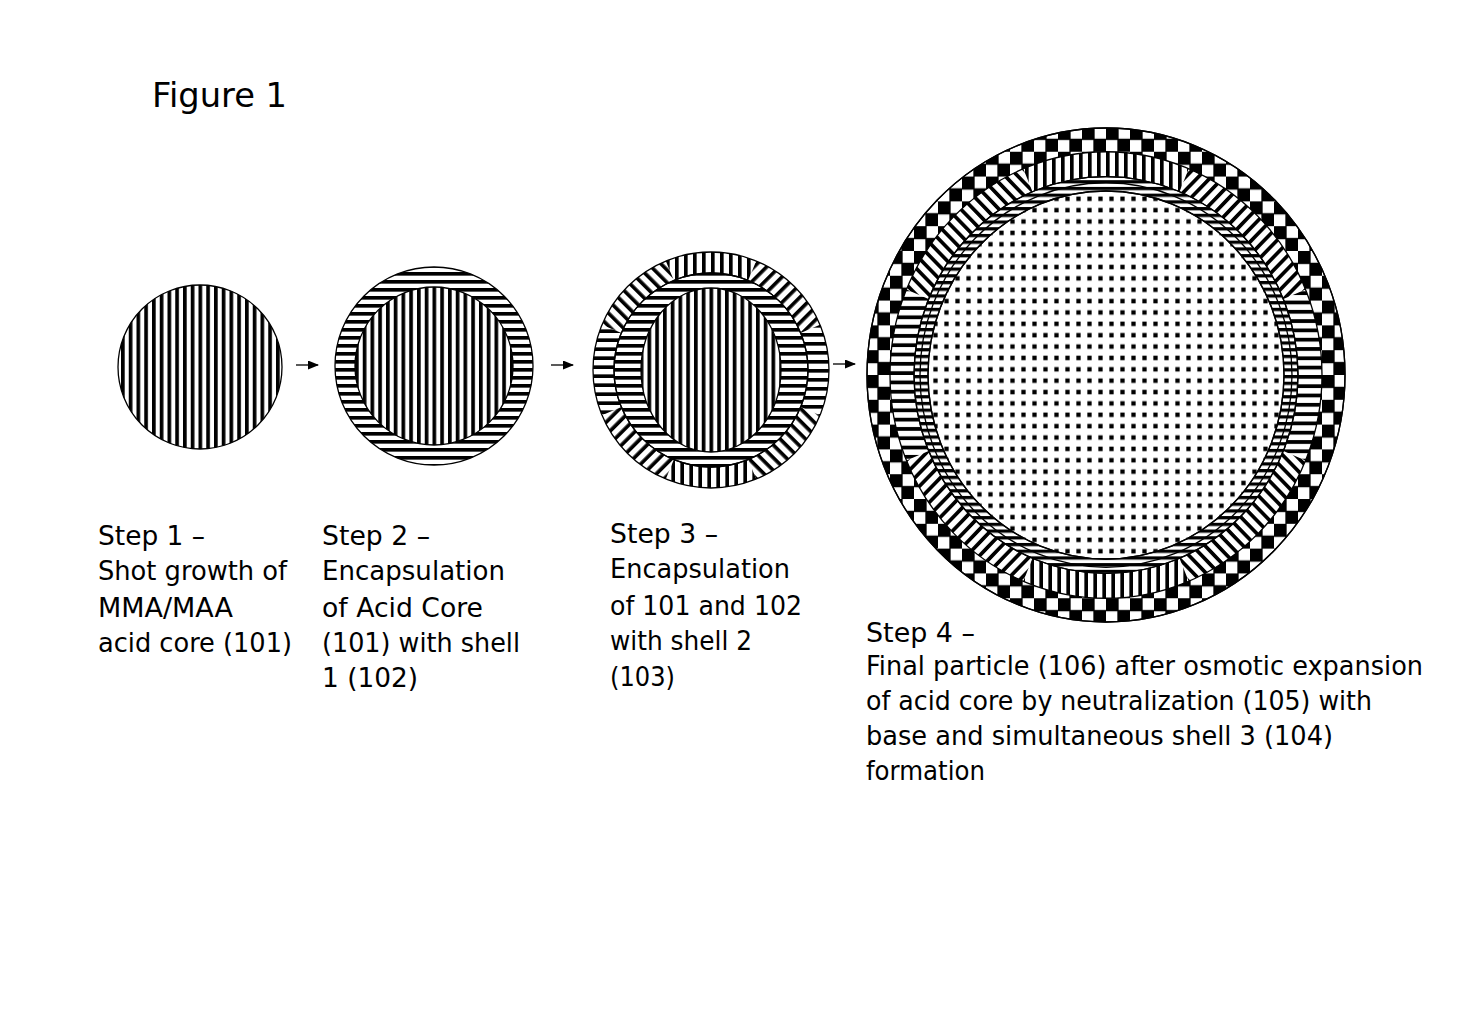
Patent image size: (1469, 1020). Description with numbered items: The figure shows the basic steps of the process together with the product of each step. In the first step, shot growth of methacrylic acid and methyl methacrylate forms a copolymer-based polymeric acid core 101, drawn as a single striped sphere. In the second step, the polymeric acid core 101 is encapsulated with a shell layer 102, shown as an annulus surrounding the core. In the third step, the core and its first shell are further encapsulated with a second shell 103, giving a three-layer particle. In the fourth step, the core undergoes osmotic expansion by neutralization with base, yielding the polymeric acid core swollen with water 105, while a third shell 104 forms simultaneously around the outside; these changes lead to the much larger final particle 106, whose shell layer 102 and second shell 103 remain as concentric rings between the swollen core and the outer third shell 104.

The polymeric acid core 101 is at (192, 271).
The shell layer 102 is at (442, 264).
The second shell 103 is at (744, 249).
The third shell 104 is at (1312, 501).
The polymeric acid core swollen with water 105 is at (1114, 247).
The final particle 106 is at (1106, 375).